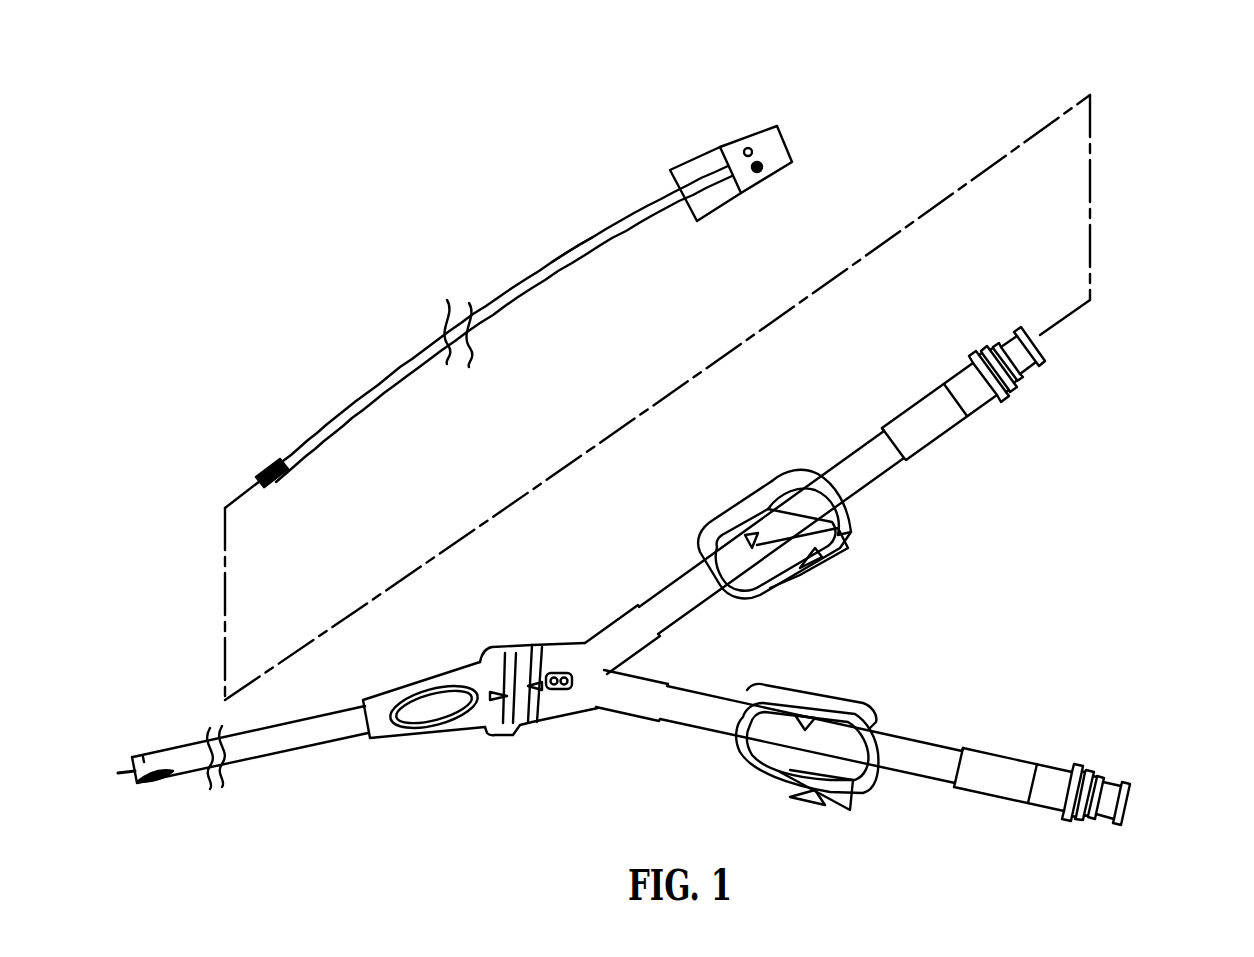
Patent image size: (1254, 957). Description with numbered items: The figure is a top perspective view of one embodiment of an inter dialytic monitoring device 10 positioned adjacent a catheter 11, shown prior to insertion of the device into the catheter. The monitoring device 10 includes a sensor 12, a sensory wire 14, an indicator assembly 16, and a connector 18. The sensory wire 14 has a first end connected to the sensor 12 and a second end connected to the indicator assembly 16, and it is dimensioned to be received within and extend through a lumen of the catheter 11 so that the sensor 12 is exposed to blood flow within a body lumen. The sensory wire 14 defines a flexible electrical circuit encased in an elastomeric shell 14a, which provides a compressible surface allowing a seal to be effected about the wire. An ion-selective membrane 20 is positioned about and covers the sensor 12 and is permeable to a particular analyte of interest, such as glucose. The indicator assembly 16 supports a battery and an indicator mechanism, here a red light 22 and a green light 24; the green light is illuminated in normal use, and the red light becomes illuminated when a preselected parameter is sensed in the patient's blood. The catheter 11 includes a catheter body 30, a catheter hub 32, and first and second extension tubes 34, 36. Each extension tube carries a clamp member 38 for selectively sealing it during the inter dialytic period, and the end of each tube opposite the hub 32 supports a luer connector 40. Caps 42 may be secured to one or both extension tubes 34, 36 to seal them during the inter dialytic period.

The monitoring device 10 is at (500, 324).
The catheter 11 is at (670, 598).
The sensor 12 is at (258, 474).
The sensory wire 14 is at (392, 380).
The elastomeric shell 14a is at (553, 280).
The indicator assembly 16 is at (797, 138).
The connector 18 is at (688, 162).
The ion-selective membrane 20 is at (271, 484).
The red light 22 is at (760, 173).
The green light 24 is at (752, 149).
The catheter body 30 is at (250, 755).
The catheter hub 32 is at (450, 737).
The first extension tube 34 is at (880, 481).
The second extension tube 36 is at (912, 735).
The clamp member 38 is at (812, 575).
The luer connector 40 is at (992, 407).
The cap 42 is at (1052, 350).